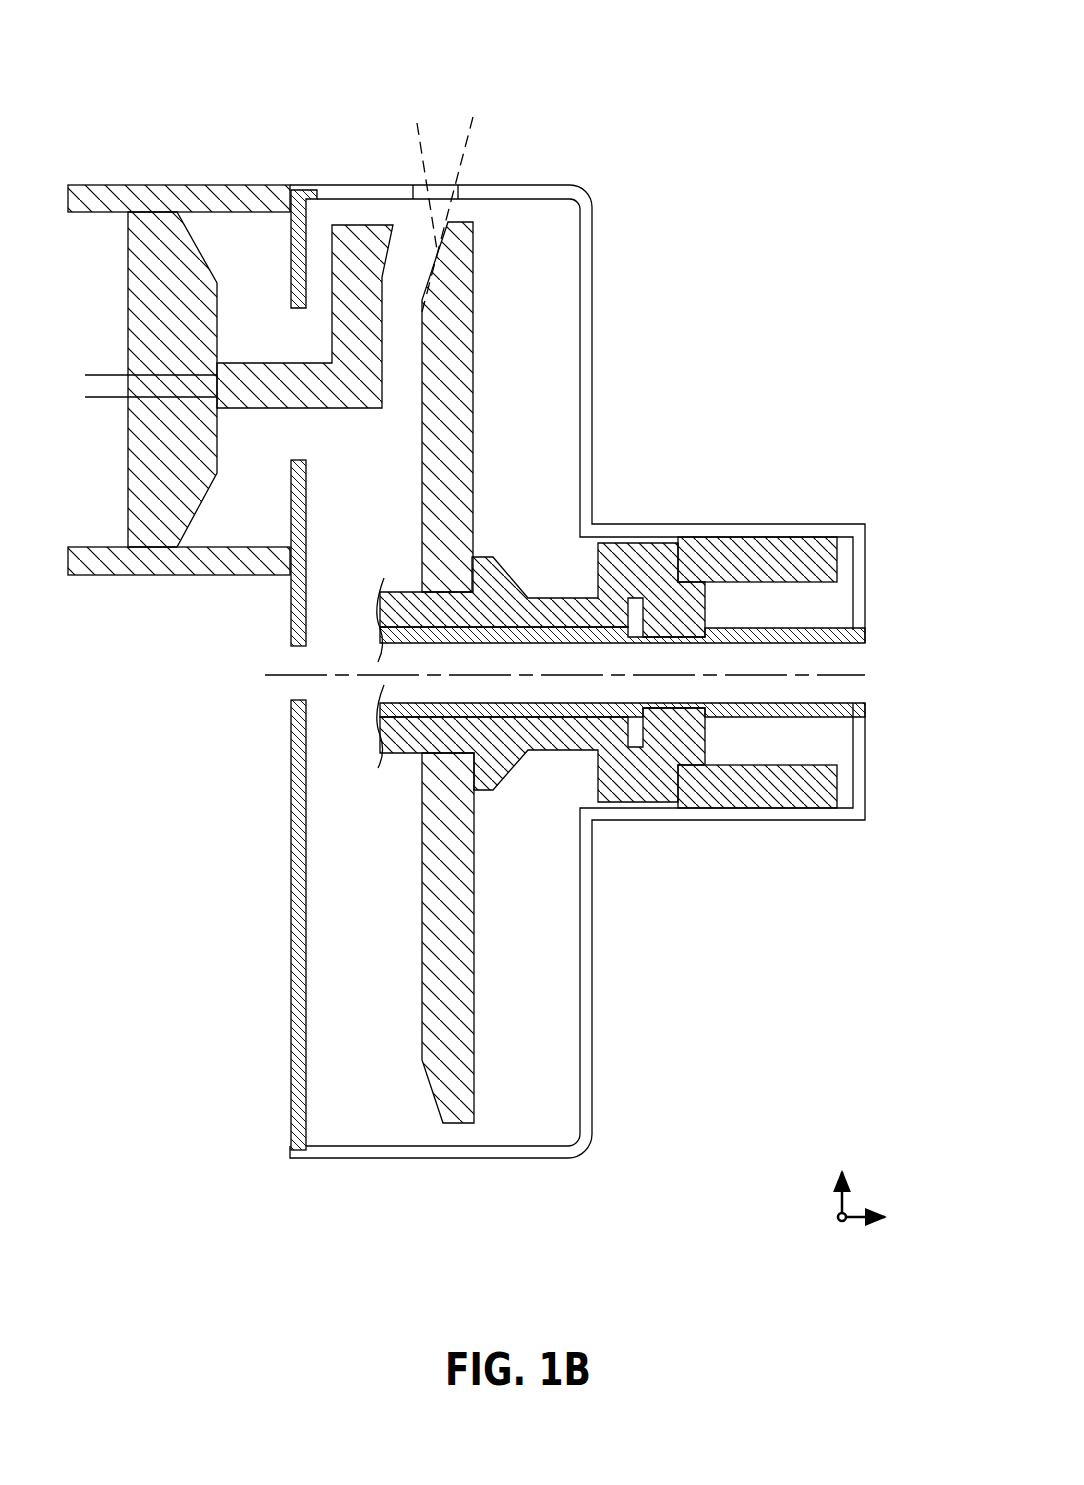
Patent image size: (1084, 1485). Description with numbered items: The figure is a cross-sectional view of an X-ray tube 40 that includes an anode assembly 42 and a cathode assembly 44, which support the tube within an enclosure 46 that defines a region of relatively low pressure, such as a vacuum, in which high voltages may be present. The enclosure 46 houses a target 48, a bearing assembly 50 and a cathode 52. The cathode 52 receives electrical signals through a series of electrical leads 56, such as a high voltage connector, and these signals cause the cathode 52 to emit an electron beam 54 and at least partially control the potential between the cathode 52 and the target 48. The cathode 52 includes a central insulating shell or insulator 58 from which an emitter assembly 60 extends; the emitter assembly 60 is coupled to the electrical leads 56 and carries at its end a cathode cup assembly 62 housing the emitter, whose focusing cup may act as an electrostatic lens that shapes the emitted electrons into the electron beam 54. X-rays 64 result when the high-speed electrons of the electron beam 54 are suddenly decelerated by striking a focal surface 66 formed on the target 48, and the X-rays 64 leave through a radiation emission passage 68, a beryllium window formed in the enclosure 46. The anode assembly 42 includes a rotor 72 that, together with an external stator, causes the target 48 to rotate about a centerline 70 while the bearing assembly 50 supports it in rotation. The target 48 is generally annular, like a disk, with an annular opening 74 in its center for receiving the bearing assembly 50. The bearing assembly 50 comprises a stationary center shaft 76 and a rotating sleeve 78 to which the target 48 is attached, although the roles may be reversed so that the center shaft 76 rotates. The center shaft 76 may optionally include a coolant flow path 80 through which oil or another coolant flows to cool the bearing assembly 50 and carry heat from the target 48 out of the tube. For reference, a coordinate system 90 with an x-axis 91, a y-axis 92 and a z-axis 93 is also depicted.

The X-ray tube 40 is at (497, 58).
The anode assembly 42 is at (577, 684).
The cathode assembly 44 is at (238, 155).
The enclosure 46 is at (330, 1160).
The target 48 is at (476, 370).
The bearing assembly 50 is at (713, 740).
The cathode 52 is at (305, 355).
The electron beam 54 is at (426, 276).
The electrical leads 56 is at (105, 372).
The insulator 58 is at (125, 240).
The emitter assembly 60 is at (330, 412).
The cathode cup assembly 62 is at (365, 199).
The X-rays 64 is at (472, 140).
The focal surface 66 is at (420, 1077).
The radiation emission passage 68 is at (460, 193).
The centerline 70 is at (322, 672).
The rotor 72 is at (762, 530).
The annular opening 74 is at (412, 588).
The center shaft 76 is at (553, 703).
The sleeve 78 is at (565, 752).
The coolant flow path 80 is at (872, 675).
The coordinate system 90 is at (822, 1176).
The x-axis 91 is at (887, 1215).
The y-axis 92 is at (843, 1225).
The z-axis 93 is at (843, 1170).